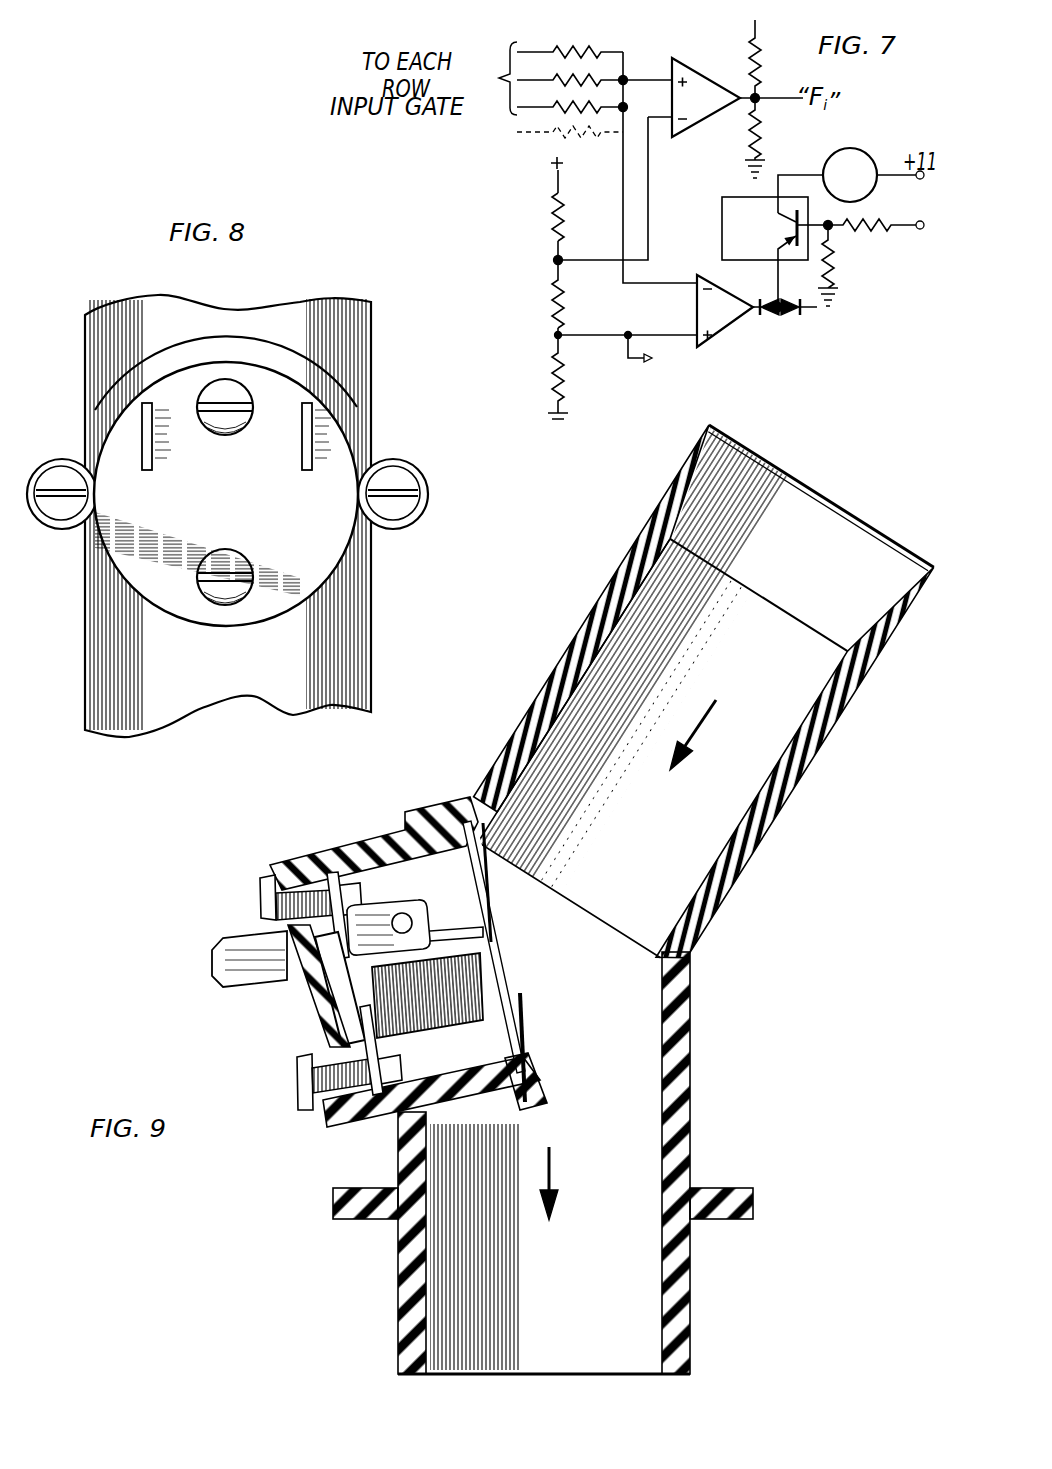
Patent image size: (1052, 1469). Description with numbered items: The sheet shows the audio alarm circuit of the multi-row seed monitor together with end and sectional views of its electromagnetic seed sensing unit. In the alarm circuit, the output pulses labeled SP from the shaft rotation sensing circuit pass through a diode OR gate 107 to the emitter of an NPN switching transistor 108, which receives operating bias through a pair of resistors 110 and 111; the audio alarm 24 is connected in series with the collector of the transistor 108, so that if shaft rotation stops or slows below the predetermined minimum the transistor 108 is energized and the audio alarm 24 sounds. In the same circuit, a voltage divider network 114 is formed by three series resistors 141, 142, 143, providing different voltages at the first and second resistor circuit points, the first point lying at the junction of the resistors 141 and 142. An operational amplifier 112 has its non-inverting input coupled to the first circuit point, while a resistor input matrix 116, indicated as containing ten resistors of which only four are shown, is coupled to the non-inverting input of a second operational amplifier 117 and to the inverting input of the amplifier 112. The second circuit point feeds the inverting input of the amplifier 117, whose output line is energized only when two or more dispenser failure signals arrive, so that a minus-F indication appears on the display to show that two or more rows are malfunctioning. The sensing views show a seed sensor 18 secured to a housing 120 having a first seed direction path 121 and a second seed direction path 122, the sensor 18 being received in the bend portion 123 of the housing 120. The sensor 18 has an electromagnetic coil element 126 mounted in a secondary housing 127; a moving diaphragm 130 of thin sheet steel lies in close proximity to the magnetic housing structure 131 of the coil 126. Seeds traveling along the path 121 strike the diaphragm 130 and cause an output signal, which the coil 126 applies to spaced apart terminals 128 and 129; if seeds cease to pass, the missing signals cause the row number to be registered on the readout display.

In FIG. 7, the resistor input matrix 116 is at (533, 154).
In FIG. 7, the second operational amplifier 117 is at (706, 80).
In FIG. 7, the audio alarm 24 is at (853, 148).
In FIG. 7, the NPN switching transistor 108 is at (796, 224).
In FIG. 7, the resistor 110 is at (873, 219).
In FIG. 7, the resistor 111 is at (838, 257).
In FIG. 7, the operational amplifier 112 is at (726, 323).
In FIG. 7, the diode OR gate 107 is at (783, 319).
In FIG. 7, the voltage divider network 114 is at (540, 293).
In FIG. 7, the resistor 141 is at (574, 387).
In FIG. 7, the resistor 142 is at (574, 297).
In FIG. 7, the resistor 143 is at (568, 215).
In FIG. 8, the seed sensor 18 is at (339, 455).
In FIG. 9, the seed sensor 18 is at (307, 856).
In FIG. 8, the housing 120 is at (368, 624).
In FIG. 9, the housing 120 is at (601, 602).
In FIG. 9, the first seed direction path 121 is at (712, 722).
In FIG. 9, the second seed direction path 122 is at (556, 1170).
In FIG. 9, the bend portion 123 is at (606, 994).
In FIG. 9, the electro-magnetic coil element 126 is at (452, 1012).
In FIG. 9, the secondary housing 127 is at (293, 1005).
In FIG. 8, the terminal 128 is at (152, 432).
In FIG. 9, the terminal 128 is at (221, 942).
In FIG. 8, the terminal 129 is at (298, 417).
In FIG. 9, the diaphragm 130 is at (486, 926).
In FIG. 9, the magnetic housing structure 131 is at (447, 930).